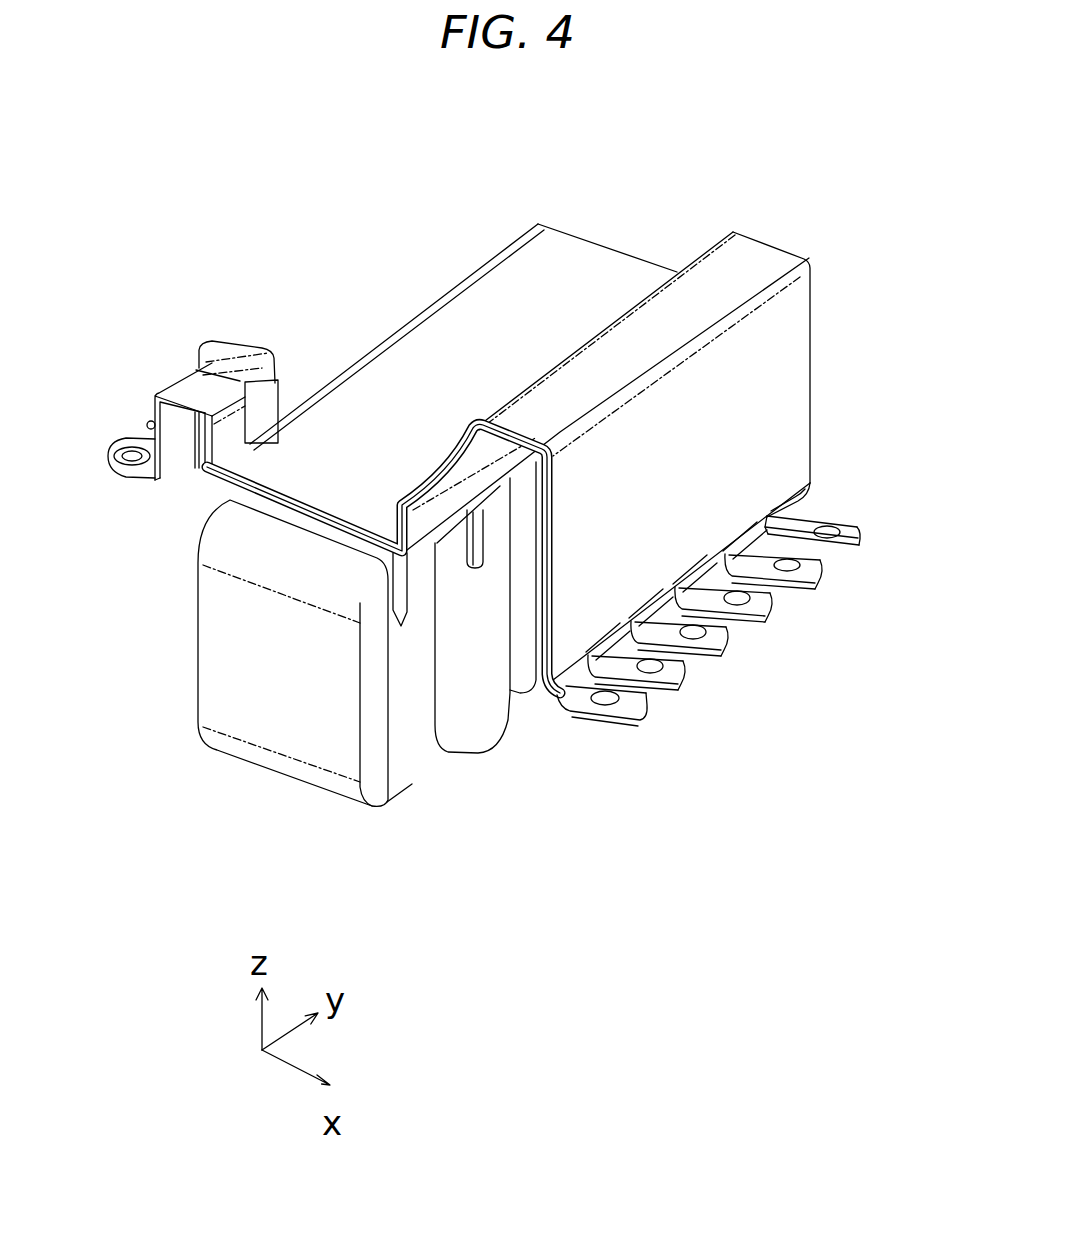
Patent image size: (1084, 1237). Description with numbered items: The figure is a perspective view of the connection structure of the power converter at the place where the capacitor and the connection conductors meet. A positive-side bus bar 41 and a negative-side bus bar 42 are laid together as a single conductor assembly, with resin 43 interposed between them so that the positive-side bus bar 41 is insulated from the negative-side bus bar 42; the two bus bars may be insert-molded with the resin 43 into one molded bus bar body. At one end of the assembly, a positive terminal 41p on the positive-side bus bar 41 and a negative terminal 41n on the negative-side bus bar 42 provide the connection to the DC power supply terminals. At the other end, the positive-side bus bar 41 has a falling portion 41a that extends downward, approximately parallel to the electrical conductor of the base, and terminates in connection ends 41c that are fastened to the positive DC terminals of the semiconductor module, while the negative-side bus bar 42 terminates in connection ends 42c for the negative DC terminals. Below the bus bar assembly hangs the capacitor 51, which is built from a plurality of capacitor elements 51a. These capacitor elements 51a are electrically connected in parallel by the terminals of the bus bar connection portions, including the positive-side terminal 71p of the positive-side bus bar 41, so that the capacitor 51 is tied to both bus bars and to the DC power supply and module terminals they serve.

The positive-side bus bar 41 is at (732, 273).
The falling portion 41a is at (728, 462).
The connection end 41c is at (800, 586).
The negative terminal 41n is at (180, 388).
The positive terminal 41p is at (226, 353).
The negative-side bus bar 42 is at (467, 457).
The connection end 42c is at (832, 546).
The resin 43 is at (510, 450).
The capacitor 51 is at (203, 710).
The capacitor element 51a is at (303, 703).
The positive-side terminal 71p is at (394, 625).